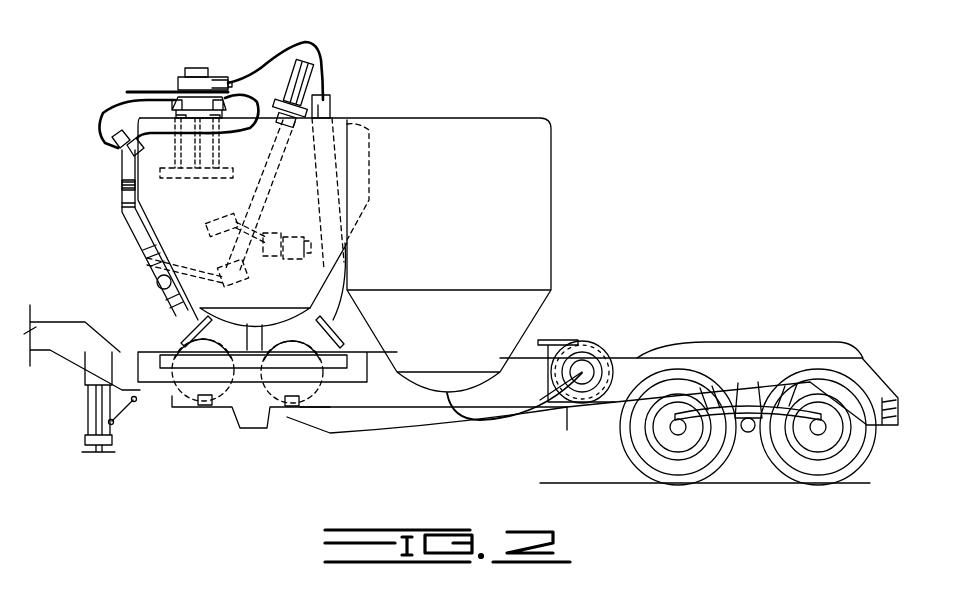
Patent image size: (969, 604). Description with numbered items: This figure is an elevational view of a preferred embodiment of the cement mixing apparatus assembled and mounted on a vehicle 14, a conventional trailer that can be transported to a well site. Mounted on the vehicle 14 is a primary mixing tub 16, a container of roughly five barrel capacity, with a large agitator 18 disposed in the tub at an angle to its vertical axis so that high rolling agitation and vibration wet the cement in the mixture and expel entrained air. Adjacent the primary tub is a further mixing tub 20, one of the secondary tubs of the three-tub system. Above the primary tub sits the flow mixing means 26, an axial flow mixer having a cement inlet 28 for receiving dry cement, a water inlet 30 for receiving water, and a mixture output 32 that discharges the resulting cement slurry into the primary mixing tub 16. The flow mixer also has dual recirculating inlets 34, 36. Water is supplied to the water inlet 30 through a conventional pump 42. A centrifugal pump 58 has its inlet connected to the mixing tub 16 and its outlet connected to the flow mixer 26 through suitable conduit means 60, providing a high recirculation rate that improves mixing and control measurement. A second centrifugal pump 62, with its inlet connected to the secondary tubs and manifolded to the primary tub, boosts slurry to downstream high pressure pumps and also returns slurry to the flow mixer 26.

The vehicle 14 is at (700, 372).
The primary mixing tub 16 is at (173, 228).
The agitator 18 is at (308, 50).
The mixing tub 20 is at (540, 184).
The flow mixing means 26 is at (214, 75).
The cement inlet 28 is at (195, 68).
The water inlet 30 is at (228, 82).
The mixture output 32 is at (188, 180).
The recirculating inlet 34 is at (226, 100).
The recirculating inlet 36 is at (177, 100).
The pump 42 is at (292, 352).
The pump 58 is at (202, 342).
The conduit means 60 is at (122, 211).
The pump 62 is at (578, 403).